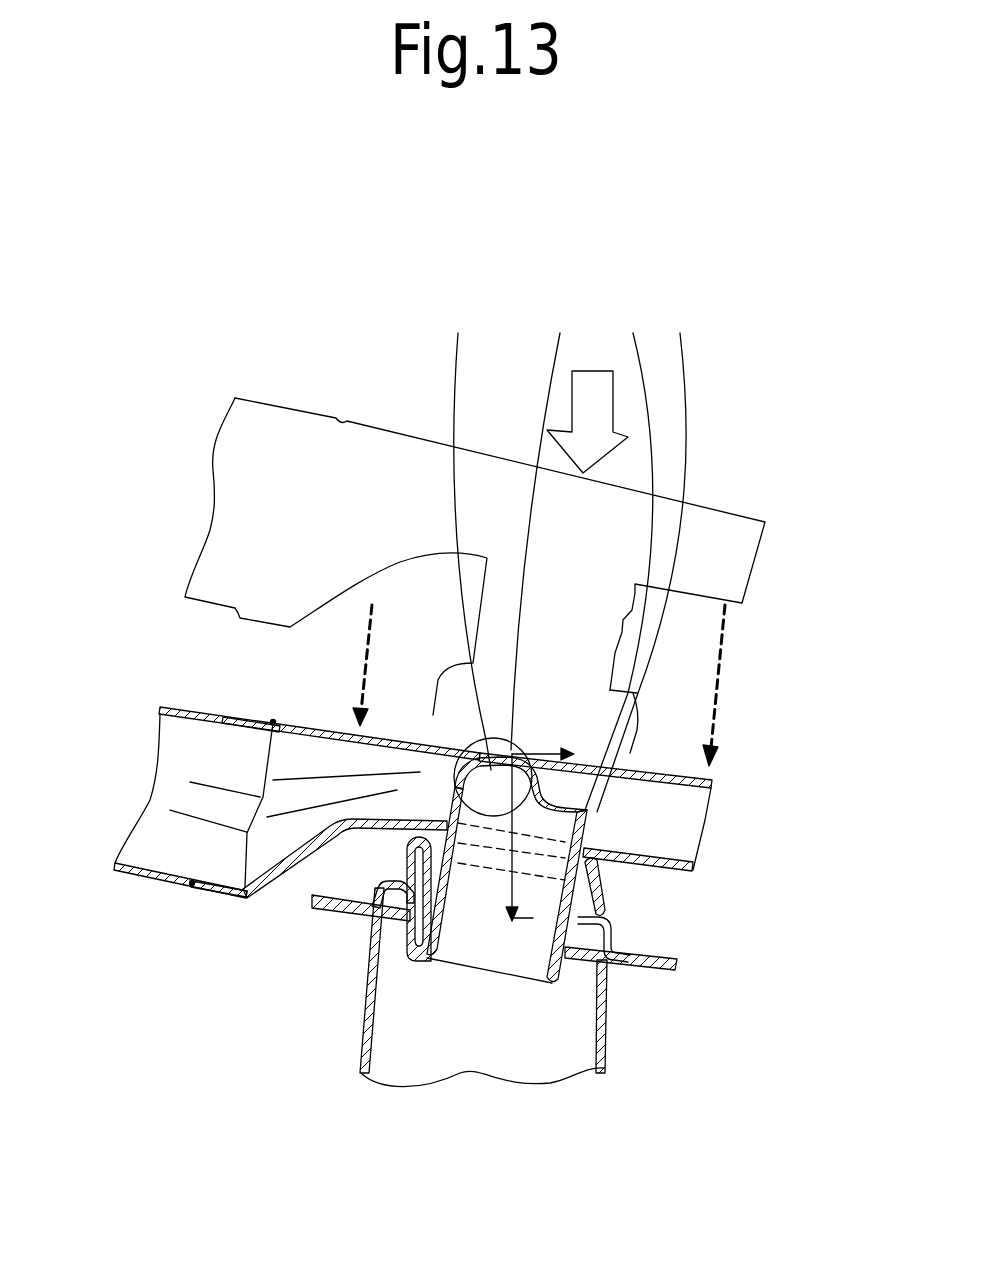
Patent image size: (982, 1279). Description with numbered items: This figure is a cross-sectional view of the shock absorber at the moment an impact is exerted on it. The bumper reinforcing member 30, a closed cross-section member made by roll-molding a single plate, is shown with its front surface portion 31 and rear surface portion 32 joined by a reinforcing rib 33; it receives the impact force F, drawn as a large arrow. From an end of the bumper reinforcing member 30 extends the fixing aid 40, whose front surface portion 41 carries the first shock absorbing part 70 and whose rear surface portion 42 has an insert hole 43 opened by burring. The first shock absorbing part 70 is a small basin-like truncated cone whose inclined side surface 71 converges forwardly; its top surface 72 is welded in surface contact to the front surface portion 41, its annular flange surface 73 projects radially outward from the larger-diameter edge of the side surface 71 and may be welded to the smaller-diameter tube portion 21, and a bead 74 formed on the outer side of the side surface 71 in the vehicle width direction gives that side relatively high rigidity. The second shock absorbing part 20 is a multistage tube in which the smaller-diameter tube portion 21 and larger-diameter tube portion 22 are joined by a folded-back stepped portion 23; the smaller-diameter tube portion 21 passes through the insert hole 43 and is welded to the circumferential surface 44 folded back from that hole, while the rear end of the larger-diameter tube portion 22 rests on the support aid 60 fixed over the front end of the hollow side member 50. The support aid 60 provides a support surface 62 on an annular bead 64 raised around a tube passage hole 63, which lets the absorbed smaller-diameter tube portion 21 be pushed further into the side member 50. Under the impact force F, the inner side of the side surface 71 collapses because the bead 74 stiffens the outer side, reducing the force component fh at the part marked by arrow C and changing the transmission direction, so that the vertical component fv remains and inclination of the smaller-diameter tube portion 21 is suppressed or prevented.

The second shock absorbing part 20 is at (793, 933).
The smaller-diameter tube portion 21 is at (532, 942).
The larger-diameter tube portion 22 is at (603, 893).
The stepped portion 23 is at (593, 880).
The bumper reinforcing member 30 is at (65, 730).
The front surface portion 31 is at (170, 722).
The rear surface portion 32 is at (163, 872).
The reinforcing rib 33 is at (180, 778).
The fixing aid 40 is at (803, 773).
The front surface portion 41 is at (683, 787).
The rear surface portion 42 is at (600, 851).
The insert hole 43 is at (588, 850).
The circumferential surface 44 is at (592, 870).
The side member 50 is at (502, 1047).
The support aid 60 is at (273, 945).
The support surface 62 is at (372, 906).
The tube passage hole 63 is at (380, 945).
The annular bead 64 is at (413, 893).
The first shock absorbing part 70 is at (707, 307).
The side surface 71 is at (467, 536).
The top surface 72 is at (547, 526).
The annular flange surface 73 is at (644, 557).
The bead 74 is at (619, 556).
The arrow C is at (449, 803).
The impact force F is at (587, 422).
The component of force fh is at (543, 743).
The vertical force component fv is at (530, 837).